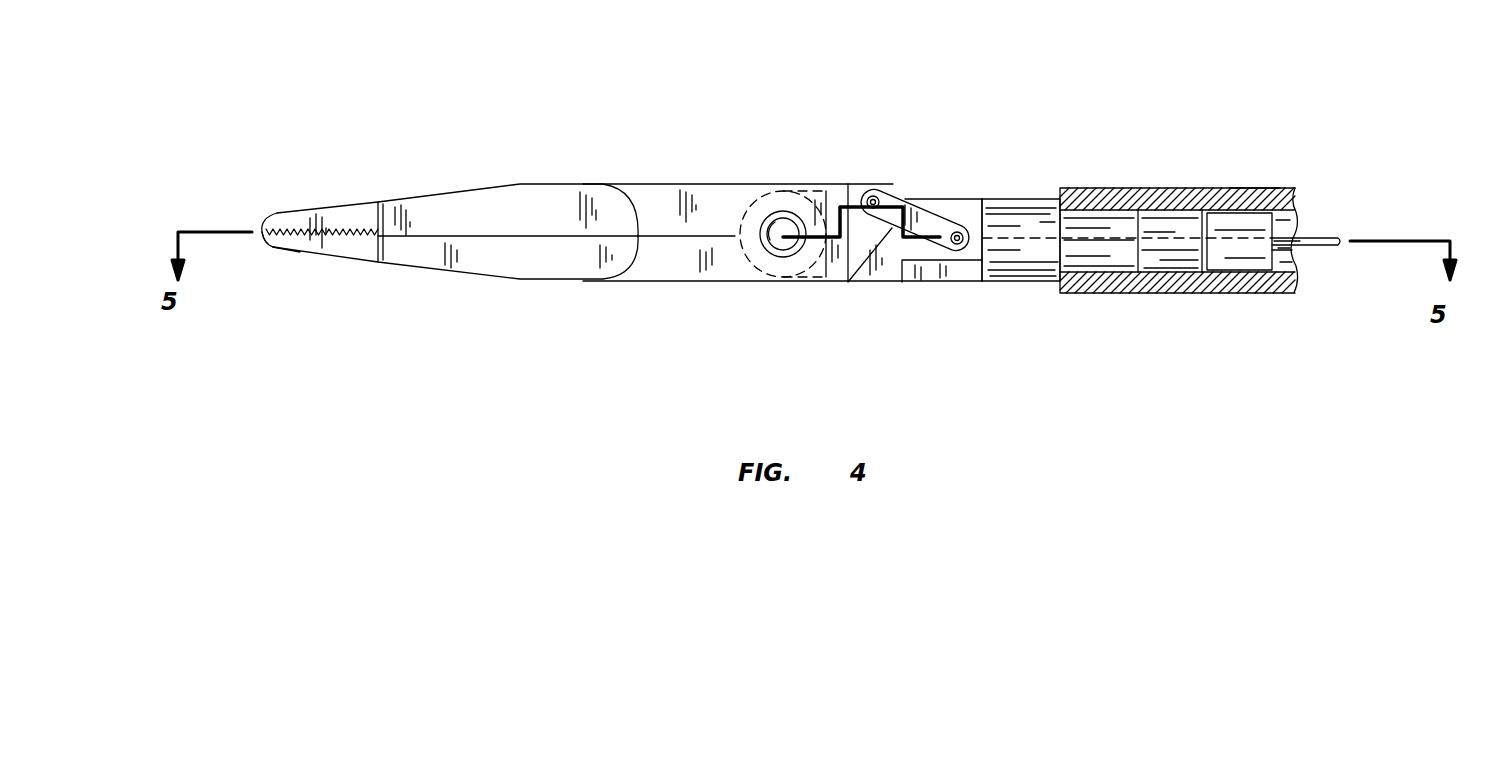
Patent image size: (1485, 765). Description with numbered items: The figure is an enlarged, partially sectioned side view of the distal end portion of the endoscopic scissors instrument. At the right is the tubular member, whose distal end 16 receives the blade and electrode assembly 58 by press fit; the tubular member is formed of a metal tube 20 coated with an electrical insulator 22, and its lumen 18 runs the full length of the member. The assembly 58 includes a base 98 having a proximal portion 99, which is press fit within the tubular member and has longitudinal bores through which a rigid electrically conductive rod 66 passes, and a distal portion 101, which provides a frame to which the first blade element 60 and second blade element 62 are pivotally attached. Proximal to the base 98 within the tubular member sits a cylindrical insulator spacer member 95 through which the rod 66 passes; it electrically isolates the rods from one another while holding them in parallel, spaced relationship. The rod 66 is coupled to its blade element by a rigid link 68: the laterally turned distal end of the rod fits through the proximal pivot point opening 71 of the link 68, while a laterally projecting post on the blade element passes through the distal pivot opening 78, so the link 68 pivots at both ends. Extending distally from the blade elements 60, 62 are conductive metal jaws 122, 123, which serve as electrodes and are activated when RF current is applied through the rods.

The distal end 16 is at (1100, 190).
The lumen 18 is at (1295, 263).
The metal tube 20 is at (1232, 222).
The electrical insulator 22 is at (1250, 190).
The blade and electrode assembly 58 is at (510, 140).
The first blade element 60 is at (470, 283).
The second blade element 62 is at (447, 185).
The electrically conductive rod 66 is at (1005, 230).
The rigid link 68 is at (930, 212).
The proximal pivot point opening 71 is at (955, 245).
The distal pivot opening 78 is at (870, 197).
The cylindrical insulator spacer member 95 is at (1265, 225).
The base 98 is at (1030, 285).
The proximal portion 99 is at (1140, 262).
The distal portion 101 is at (888, 280).
The conductive metal jaw 122 is at (305, 252).
The conductive metal jaw 123 is at (310, 212).